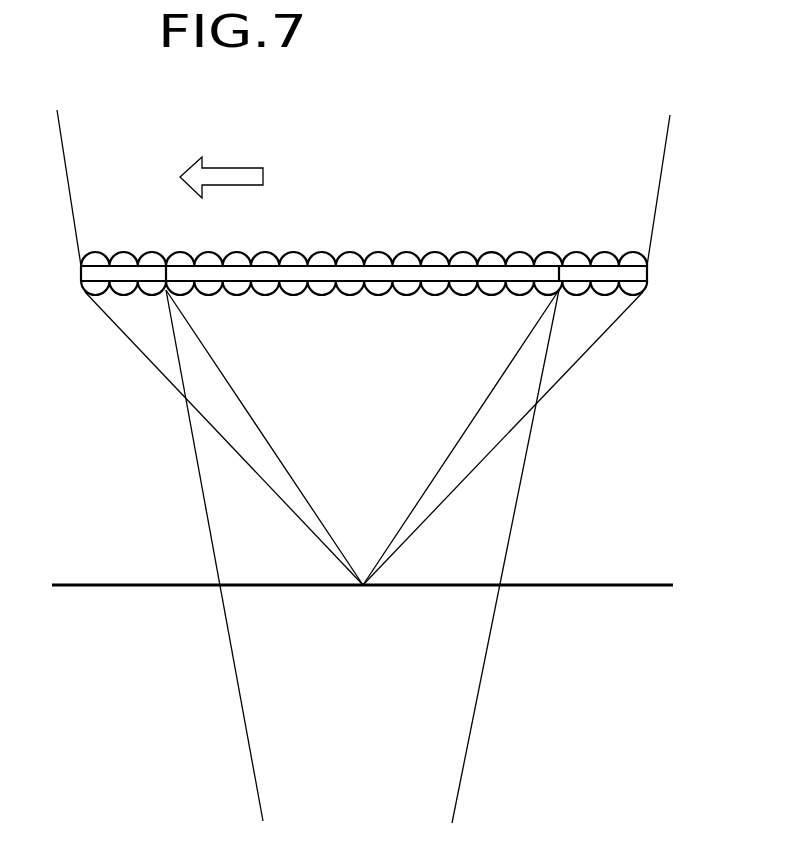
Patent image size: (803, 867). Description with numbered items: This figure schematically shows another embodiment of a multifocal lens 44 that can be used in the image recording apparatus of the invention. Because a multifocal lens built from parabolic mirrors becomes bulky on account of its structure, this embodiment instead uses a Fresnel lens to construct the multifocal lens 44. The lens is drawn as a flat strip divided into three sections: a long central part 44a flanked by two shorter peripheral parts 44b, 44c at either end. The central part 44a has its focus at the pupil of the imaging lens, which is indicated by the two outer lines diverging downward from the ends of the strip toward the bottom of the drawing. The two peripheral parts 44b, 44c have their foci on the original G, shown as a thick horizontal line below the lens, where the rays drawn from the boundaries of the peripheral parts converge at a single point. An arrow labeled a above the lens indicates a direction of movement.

The multifocal lens 44 is at (364, 164).
The central part 44a is at (405, 254).
The peripheral part 44b is at (605, 265).
The peripheral part 44c is at (126, 254).
The moving direction a is at (263, 170).
The original G is at (568, 584).